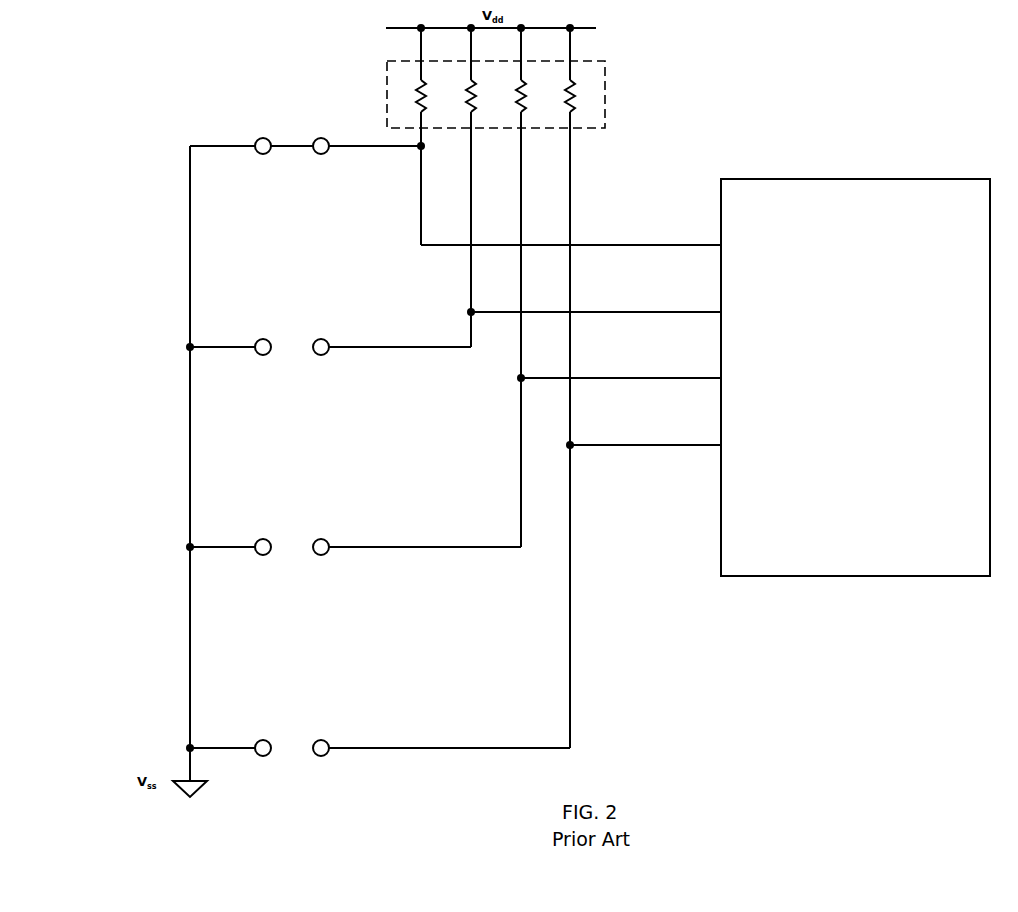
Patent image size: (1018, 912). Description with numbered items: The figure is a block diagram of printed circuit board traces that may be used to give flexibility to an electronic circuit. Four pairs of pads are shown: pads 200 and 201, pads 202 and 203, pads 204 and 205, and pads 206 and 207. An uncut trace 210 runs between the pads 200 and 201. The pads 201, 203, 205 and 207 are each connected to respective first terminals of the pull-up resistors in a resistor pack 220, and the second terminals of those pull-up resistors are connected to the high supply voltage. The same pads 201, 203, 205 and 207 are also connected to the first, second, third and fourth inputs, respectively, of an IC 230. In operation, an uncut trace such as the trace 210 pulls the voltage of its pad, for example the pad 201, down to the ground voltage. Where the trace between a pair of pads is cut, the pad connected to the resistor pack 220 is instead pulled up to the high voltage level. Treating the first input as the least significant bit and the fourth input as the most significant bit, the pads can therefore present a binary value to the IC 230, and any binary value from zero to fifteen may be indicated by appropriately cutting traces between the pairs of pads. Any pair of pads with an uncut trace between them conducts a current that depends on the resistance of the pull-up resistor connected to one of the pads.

The pad 200 is at (267, 153).
The pad 201 is at (316, 153).
The pad 202 is at (267, 354).
The pad 203 is at (316, 354).
The pad 204 is at (267, 554).
The pad 205 is at (316, 554).
The pad 206 is at (267, 755).
The pad 207 is at (316, 755).
The uncut trace 210 is at (283, 144).
The resistor pack 220 is at (605, 85).
The IC 230 is at (850, 178).